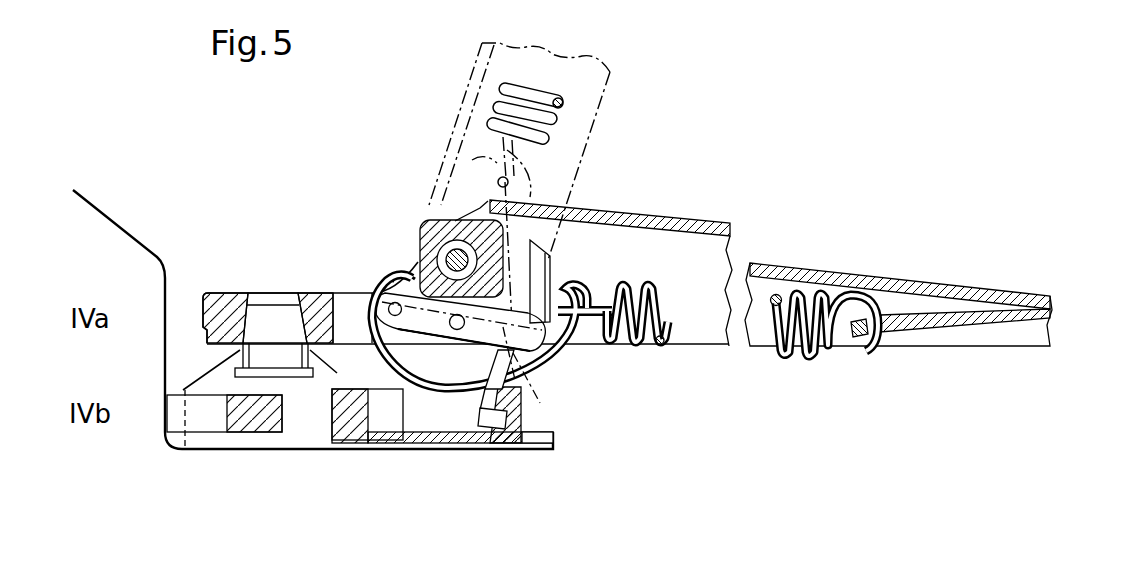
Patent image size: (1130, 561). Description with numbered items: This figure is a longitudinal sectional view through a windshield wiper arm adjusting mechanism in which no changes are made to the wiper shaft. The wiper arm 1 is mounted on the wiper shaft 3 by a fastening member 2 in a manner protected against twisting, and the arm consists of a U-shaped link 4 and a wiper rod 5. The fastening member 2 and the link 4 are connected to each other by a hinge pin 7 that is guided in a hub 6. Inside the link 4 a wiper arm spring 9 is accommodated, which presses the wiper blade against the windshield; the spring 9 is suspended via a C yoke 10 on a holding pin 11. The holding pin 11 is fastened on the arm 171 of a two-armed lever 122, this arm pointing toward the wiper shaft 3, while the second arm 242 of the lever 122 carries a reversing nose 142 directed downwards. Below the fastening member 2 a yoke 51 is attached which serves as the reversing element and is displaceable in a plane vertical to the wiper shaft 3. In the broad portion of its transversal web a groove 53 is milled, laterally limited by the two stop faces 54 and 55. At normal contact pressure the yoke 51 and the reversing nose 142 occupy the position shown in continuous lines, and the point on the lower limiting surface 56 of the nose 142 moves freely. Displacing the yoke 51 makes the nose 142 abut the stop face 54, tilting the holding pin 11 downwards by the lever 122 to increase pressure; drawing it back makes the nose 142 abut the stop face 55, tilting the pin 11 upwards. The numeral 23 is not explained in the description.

The wiper arm 1 is at (875, 248).
The fastening member 2 is at (222, 308).
The wiper shaft 3 is at (277, 318).
The link 4 is at (773, 265).
The wiper rod 5 is at (1050, 310).
The hub 6 is at (457, 247).
The hinge pin 7 is at (456, 210).
The wiper arm spring 9 is at (815, 355).
The C yoke 10 is at (570, 328).
The holding pin 11 is at (392, 303).
The stop 23 is at (856, 340).
The reversing yoke 51 is at (210, 415).
The groove 53 is at (450, 420).
The stop face 54 is at (452, 483).
The stop face 55 is at (503, 440).
The lower limiting surface 56 is at (520, 438).
The two-armed lever 122 is at (425, 347).
The reversing nose 142 is at (522, 381).
The arm 171 is at (400, 283).
The second arm 242 is at (520, 333).